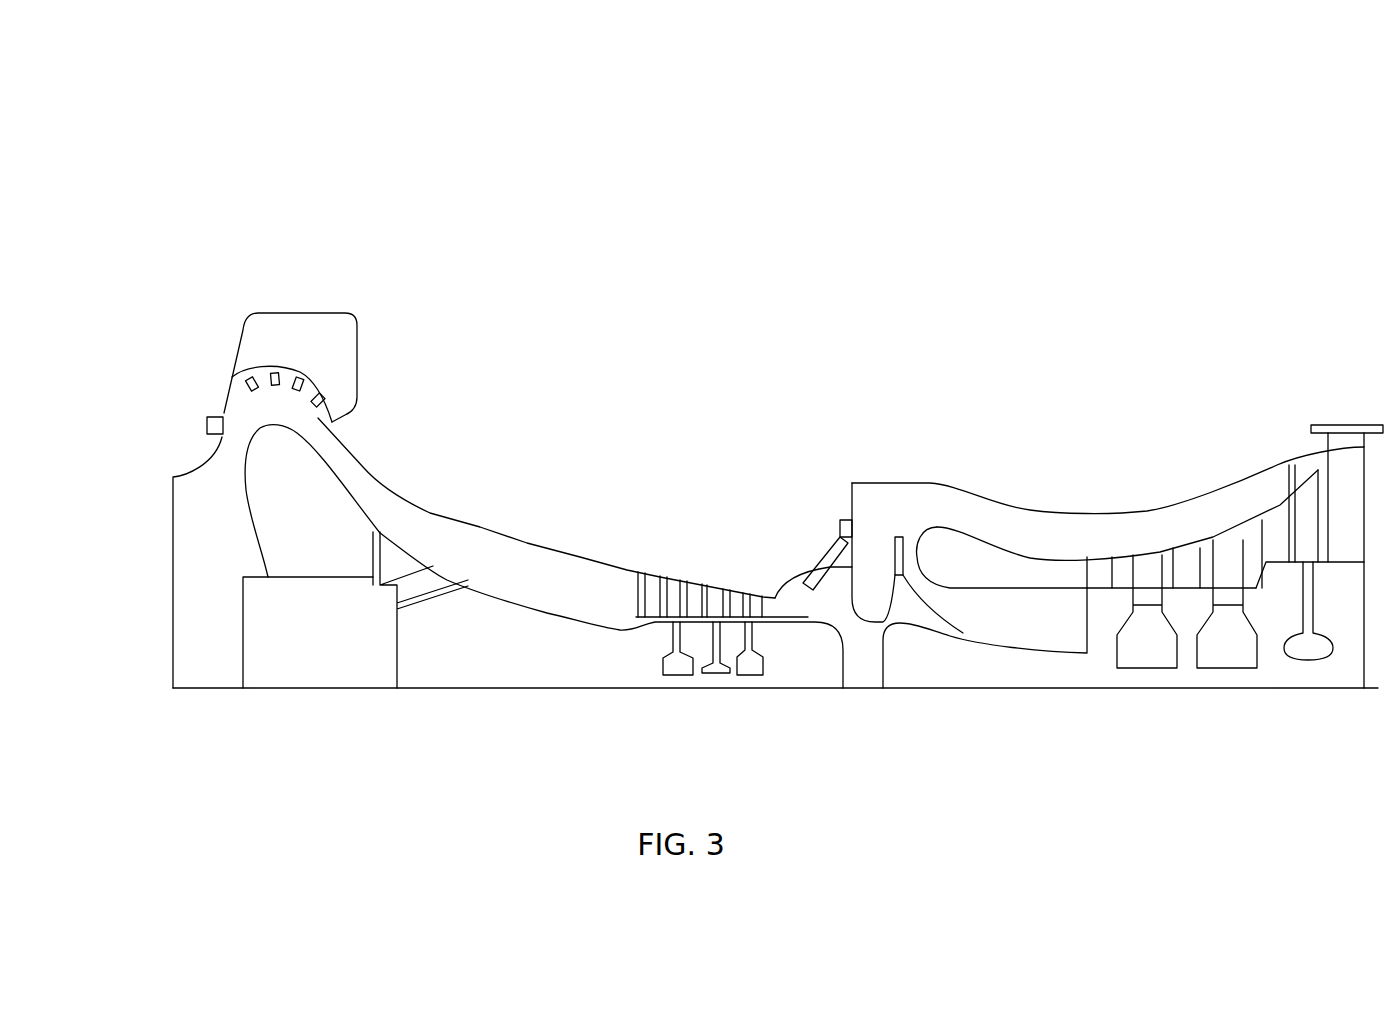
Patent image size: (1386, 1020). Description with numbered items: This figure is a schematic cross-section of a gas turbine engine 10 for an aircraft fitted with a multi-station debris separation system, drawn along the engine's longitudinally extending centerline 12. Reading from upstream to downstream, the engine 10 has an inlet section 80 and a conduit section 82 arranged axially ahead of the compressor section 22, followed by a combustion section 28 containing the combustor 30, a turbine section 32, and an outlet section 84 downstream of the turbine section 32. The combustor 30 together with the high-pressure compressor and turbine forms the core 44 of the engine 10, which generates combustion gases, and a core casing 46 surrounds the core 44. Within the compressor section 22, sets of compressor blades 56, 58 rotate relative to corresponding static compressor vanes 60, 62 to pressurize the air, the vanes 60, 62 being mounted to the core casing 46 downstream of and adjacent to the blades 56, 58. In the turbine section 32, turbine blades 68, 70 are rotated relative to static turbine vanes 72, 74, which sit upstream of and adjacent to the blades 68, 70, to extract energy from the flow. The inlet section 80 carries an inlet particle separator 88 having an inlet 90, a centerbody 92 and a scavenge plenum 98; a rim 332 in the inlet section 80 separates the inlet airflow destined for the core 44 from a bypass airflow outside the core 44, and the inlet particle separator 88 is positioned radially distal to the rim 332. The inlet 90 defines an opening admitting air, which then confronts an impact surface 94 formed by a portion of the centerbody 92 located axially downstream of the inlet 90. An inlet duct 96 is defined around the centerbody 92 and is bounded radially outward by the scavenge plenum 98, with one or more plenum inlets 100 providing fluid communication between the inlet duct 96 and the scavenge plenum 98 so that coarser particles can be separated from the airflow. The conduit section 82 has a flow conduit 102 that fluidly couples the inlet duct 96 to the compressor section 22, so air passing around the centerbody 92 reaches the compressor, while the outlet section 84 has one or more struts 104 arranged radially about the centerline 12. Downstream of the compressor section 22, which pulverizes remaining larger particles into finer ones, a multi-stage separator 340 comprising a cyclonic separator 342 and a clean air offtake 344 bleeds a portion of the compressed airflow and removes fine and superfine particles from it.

The gas turbine engine 10 is at (290, 119).
The centerline 12 is at (326, 688).
The compressor section 22 is at (808, 255).
The combustion section 28 is at (920, 255).
The combustor 30 is at (960, 543).
The turbine section 32 is at (1083, 255).
The core 44 is at (632, 719).
The core casing 46 is at (895, 483).
The compressor blades 56 is at (670, 597).
The compressor blades 58 is at (695, 596).
The static compressor vanes 60 is at (640, 577).
The static compressor vanes 62 is at (775, 598).
The turbine blades 68 is at (1147, 573).
The turbine blades 70 is at (1300, 507).
The static turbine vanes 72 is at (1093, 570).
The static turbine vanes 74 is at (1270, 547).
The inlet section 80 is at (190, 253).
The conduit section 82 is at (622, 253).
The outlet section 84 is at (1382, 255).
The inlet particle separator 88 is at (230, 300).
The inlet 90 is at (210, 558).
The centerbody 92 is at (277, 480).
The impact surface 94 is at (253, 523).
The inlet duct 96 is at (262, 418).
The scavenge plenum 98 is at (257, 337).
The plenum inlets 100 is at (240, 370).
The flow conduit 102 is at (420, 532).
The struts 104 is at (1350, 467).
The rim 332 is at (176, 470).
The multi-stage separator 340 is at (845, 462).
The cyclonic separator 342 is at (830, 552).
The clean air offtake 344 is at (893, 560).